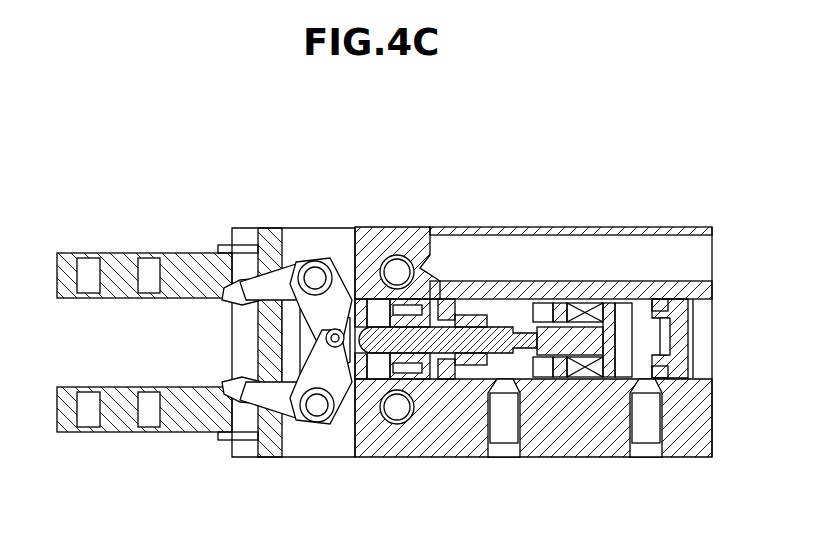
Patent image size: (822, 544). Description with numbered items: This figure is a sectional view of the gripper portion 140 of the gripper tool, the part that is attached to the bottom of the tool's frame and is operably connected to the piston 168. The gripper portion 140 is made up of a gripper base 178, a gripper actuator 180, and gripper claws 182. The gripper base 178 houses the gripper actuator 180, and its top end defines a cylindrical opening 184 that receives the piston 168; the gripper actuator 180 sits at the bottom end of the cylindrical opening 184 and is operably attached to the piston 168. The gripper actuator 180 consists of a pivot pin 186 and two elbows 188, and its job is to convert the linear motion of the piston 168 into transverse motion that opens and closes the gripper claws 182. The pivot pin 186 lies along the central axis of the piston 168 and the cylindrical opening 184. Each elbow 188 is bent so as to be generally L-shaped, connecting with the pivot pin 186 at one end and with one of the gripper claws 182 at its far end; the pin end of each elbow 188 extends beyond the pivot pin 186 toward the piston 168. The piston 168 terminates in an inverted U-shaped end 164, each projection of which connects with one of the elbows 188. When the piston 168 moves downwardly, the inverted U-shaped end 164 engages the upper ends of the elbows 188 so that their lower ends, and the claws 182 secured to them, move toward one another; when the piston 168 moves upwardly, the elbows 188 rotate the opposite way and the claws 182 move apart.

The gripper portion 140 is at (362, 148).
The inverted U-shaped end 164 is at (380, 345).
The piston 168 is at (684, 338).
The gripper base 178 is at (540, 232).
The gripper actuator 180 is at (311, 242).
The gripper claws 182 is at (116, 258).
The cylindrical opening 184 is at (705, 365).
The pivot pin 186 is at (358, 322).
The elbows 188 is at (298, 268).